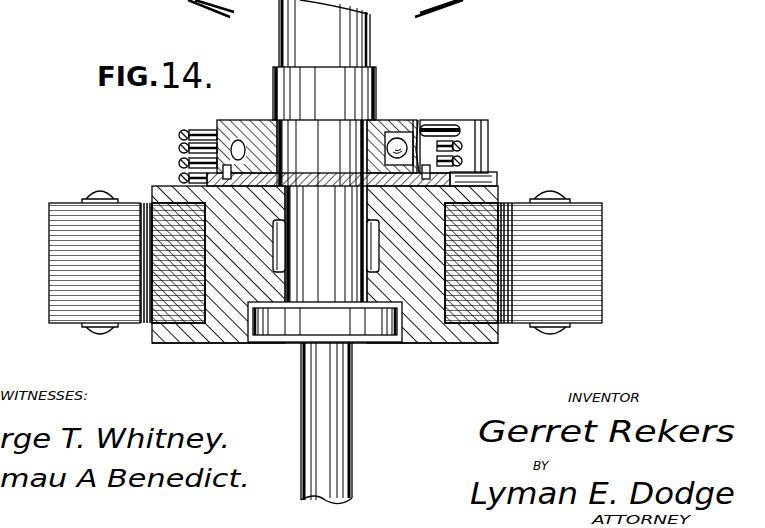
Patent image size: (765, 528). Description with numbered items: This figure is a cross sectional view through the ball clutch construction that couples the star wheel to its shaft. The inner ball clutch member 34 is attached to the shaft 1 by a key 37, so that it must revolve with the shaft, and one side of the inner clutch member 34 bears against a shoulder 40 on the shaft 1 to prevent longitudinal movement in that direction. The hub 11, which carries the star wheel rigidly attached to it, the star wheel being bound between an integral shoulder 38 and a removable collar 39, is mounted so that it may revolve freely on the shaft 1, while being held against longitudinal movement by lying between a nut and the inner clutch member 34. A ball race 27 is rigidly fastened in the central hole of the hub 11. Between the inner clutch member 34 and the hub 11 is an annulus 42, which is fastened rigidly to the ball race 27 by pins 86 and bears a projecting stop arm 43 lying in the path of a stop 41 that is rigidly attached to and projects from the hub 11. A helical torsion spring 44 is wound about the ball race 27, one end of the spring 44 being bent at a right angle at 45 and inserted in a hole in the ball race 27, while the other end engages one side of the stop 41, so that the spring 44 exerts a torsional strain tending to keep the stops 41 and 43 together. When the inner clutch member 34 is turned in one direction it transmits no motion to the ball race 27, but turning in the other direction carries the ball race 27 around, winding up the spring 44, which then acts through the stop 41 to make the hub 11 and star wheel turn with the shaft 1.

The shaft 1 is at (350, 367).
The hub member 11 is at (436, 346).
The ball race 27 is at (420, 128).
The inner clutch member 34 is at (392, 124).
The key 37 is at (273, 128).
The integral shoulder 38 is at (497, 192).
The removable collar 39 is at (498, 338).
The shoulder 40 is at (378, 118).
The stop 41 is at (490, 128).
The annulus 42 is at (181, 176).
The stop arm 43 is at (495, 175).
The helical torsion spring 44 is at (180, 134).
The bent end of spring 45 is at (440, 126).
The pins 86 is at (181, 149).